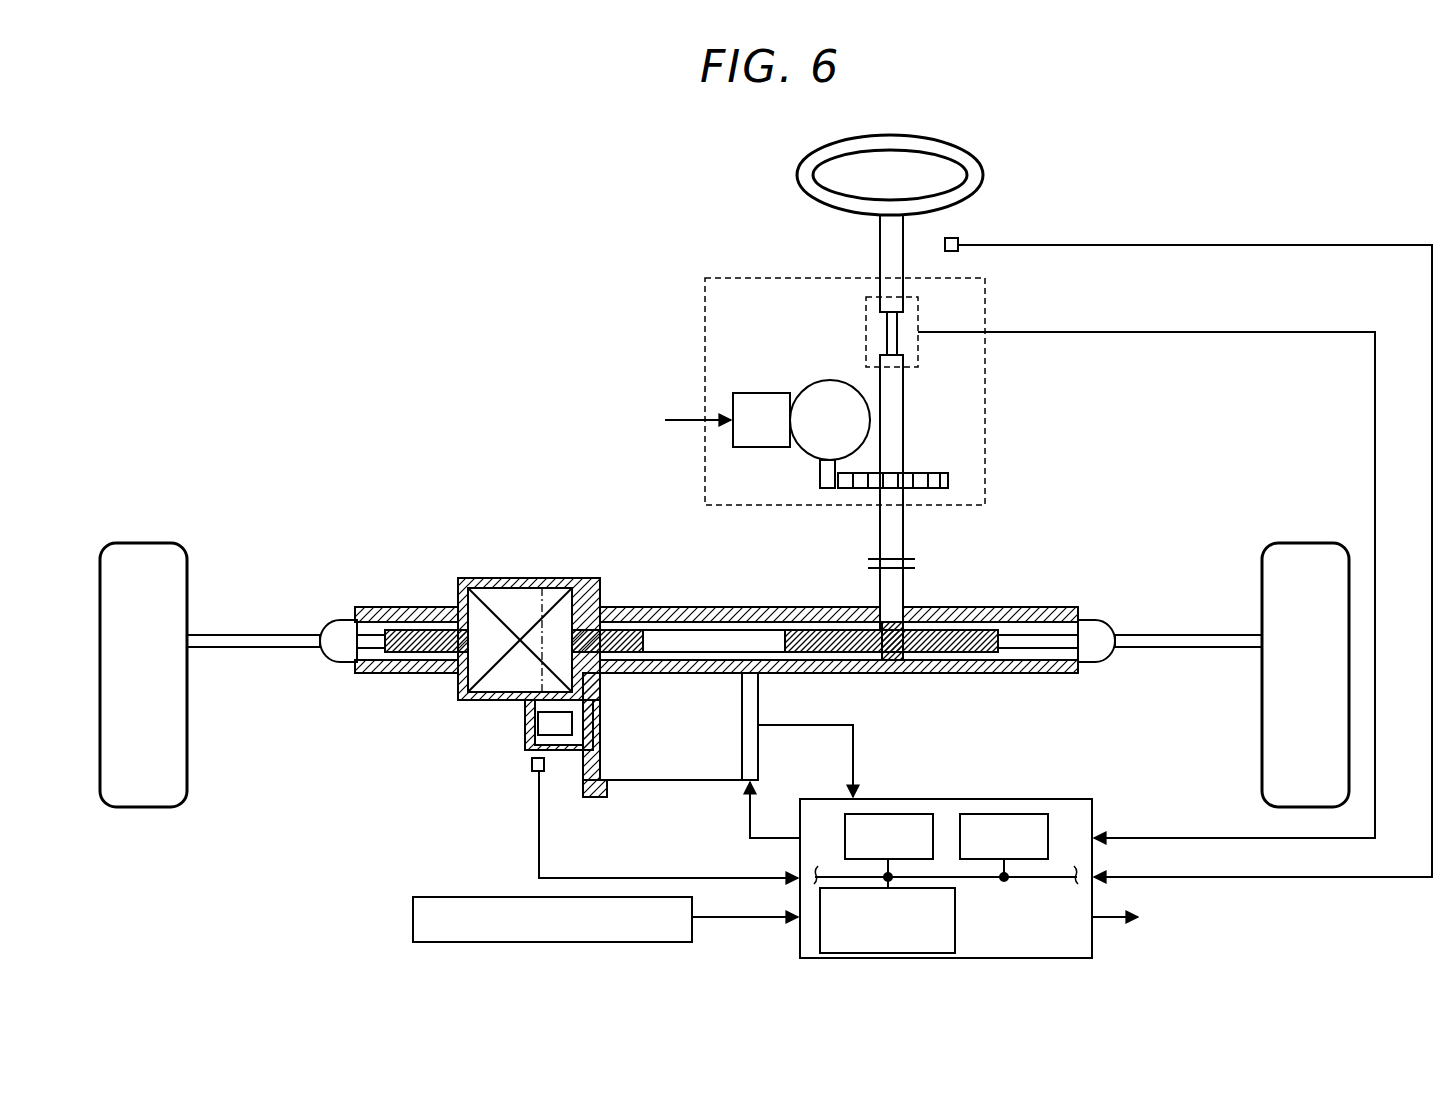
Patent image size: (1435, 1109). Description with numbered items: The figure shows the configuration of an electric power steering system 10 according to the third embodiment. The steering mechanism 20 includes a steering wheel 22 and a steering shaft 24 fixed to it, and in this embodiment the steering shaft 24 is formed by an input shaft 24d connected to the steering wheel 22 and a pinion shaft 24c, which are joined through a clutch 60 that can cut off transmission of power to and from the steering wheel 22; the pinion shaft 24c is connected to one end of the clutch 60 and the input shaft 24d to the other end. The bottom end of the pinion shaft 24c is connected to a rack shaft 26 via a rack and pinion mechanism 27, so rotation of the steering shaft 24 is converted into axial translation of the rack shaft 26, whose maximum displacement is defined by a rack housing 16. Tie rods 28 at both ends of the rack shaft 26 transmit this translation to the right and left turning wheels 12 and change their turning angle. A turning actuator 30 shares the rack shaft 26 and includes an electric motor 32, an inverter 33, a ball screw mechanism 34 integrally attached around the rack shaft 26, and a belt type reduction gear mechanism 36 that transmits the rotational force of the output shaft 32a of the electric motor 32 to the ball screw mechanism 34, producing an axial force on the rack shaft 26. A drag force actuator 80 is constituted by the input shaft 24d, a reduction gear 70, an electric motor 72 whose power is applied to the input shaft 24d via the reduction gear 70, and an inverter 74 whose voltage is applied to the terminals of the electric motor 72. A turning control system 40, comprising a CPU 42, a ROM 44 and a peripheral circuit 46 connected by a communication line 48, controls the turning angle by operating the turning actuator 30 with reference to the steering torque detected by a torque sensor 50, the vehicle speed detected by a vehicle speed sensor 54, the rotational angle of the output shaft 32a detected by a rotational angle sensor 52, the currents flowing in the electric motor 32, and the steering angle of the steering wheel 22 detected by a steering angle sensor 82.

The electric power steering system 10 is at (1268, 208).
The turning wheels 12 is at (137, 545).
The rack housing 16 is at (982, 674).
The steering mechanism 20 is at (598, 320).
The steering wheel 22 is at (983, 172).
The steering shaft 24 is at (1090, 526).
The pinion shaft 24c is at (890, 598).
The input shaft 24d is at (905, 378).
The rack shaft 26 is at (1030, 652).
The rack and pinion mechanism 27 is at (914, 682).
The tie rods 28 is at (239, 648).
The turning actuator 30 is at (716, 660).
The electric motor 32 is at (645, 782).
The output shaft 32a is at (573, 752).
The inverter 33 is at (754, 760).
The ball screw mechanism 34 is at (476, 666).
The belt type reduction gear mechanism 36 is at (510, 727).
The turning control system 40 is at (972, 861).
The CPU 42 is at (889, 814).
The ROM 44 is at (1004, 814).
The peripheral circuit 46 is at (955, 920).
The communication line 48 is at (1050, 881).
The torque sensor 50 is at (918, 313).
The rotational angle sensor 52 is at (412, 919).
The vehicle speed sensor 54 is at (529, 763).
The clutch 60 is at (909, 555).
The reduction gear 70 is at (939, 473).
The electric motor 72 is at (825, 382).
The inverter 74 is at (774, 393).
The drag force actuator 80 is at (798, 367).
The steering angle sensor 82 is at (958, 240).